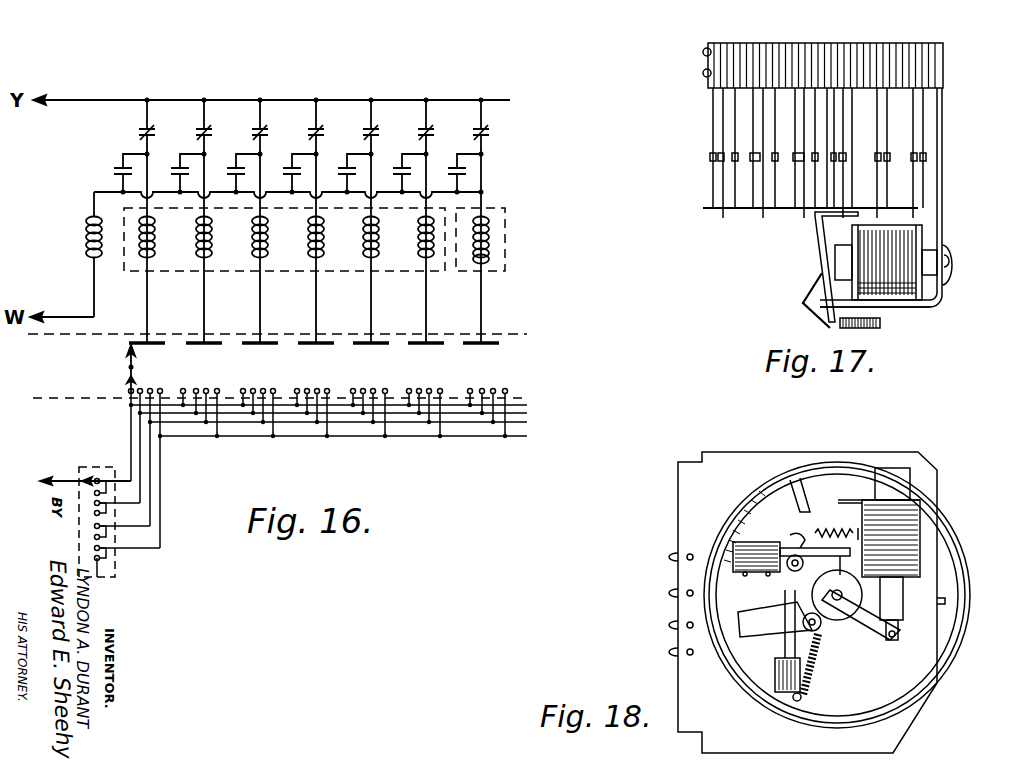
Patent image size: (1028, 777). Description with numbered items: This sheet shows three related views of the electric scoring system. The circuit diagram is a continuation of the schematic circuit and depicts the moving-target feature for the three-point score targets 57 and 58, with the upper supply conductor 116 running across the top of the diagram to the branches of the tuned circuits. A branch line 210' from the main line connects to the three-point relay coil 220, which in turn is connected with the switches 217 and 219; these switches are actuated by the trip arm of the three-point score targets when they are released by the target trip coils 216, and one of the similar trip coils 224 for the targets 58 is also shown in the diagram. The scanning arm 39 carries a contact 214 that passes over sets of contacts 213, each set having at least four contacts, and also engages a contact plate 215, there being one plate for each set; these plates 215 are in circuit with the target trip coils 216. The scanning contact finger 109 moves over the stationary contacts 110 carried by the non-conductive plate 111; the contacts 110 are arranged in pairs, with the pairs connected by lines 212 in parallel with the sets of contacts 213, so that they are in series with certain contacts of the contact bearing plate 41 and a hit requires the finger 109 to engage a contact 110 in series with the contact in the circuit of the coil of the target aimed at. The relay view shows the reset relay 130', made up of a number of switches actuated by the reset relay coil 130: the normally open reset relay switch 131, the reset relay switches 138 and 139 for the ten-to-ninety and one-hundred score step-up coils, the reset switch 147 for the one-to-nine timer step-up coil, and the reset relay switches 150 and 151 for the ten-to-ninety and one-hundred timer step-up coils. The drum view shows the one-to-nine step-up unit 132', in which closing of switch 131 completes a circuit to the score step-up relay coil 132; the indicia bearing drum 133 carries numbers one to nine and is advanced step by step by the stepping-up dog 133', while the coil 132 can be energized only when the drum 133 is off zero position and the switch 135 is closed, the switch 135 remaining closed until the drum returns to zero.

In FIG. 16, the Y supply line 116 is at (232, 100).
In FIG. 16, the switches 217 is at (140, 131).
In FIG. 16, the switches 219 is at (114, 171).
In FIG. 16, the three-point relay coil 220 is at (86, 226).
In FIG. 16, the target trip coils 216 is at (155, 246).
In FIG. 16, the trip coils 224 is at (490, 248).
In FIG. 16, the three-point score targets 57 is at (216, 274).
In FIG. 16, the three-point score targets 58 is at (470, 276).
In FIG. 16, the branch line 210' is at (62, 303).
In FIG. 16, the contact plate 215 is at (155, 348).
In FIG. 16, the scanning arm 39 is at (128, 367).
In FIG. 16, the contact 214 is at (117, 376).
In FIG. 16, the contact bearing plate 41 is at (70, 394).
In FIG. 16, the contacts 213 is at (226, 388).
In FIG. 16, the lines 212 is at (162, 476).
In FIG. 16, the scanning contact finger 109 is at (60, 477).
In FIG. 16, the stationary contacts 110 is at (97, 578).
In FIG. 16, the non-conductive plate 111 is at (120, 557).
In FIG. 17, the reset relay switch 131 is at (915, 172).
In FIG. 17, the reset relay switch 150 is at (728, 170).
In FIG. 17, the reset relay switch 151 is at (770, 167).
In FIG. 17, the reset relay switch 139 is at (812, 165).
In FIG. 17, the reset relay switch 138 is at (842, 167).
In FIG. 17, the reset switch 147 is at (880, 168).
In FIG. 17, the reset relay 130' is at (901, 269).
In FIG. 17, the reset relay coil 130 is at (893, 281).
In FIG. 18, the 1–9 step-up unit 132' is at (765, 602).
In FIG. 18, the indicia bearing drum 133 is at (837, 575).
In FIG. 18, the score step-up relay coil 132 is at (910, 554).
In FIG. 18, the stepping-up dog 133' is at (837, 614).
In FIG. 18, the switch 135 is at (740, 635).